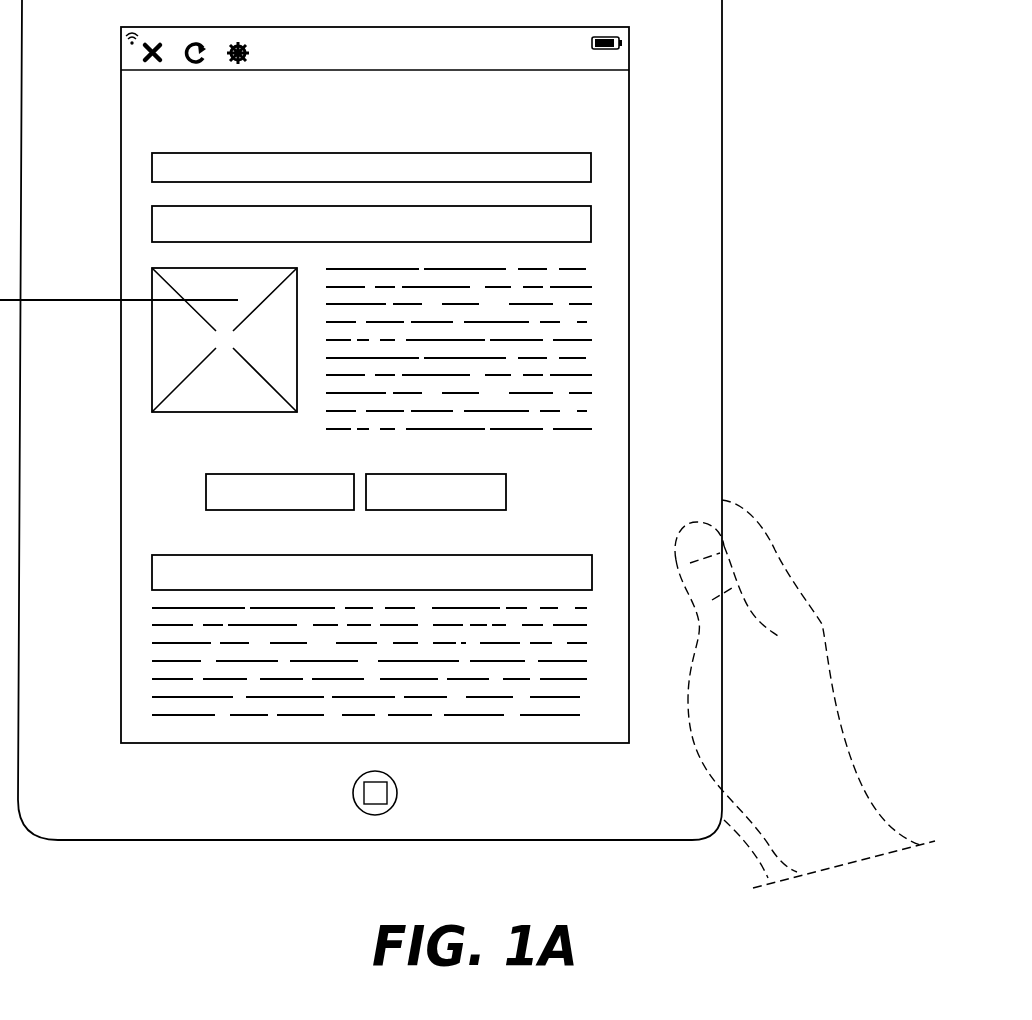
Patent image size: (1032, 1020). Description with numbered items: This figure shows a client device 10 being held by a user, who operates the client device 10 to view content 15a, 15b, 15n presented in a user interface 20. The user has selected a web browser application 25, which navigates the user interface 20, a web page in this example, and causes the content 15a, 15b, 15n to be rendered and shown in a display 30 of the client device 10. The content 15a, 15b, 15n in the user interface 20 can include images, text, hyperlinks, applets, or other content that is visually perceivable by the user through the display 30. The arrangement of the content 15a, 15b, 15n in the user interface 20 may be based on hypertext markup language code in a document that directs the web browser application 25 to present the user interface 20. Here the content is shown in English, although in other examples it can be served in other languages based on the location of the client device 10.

The client device 10 is at (722, 106).
The user interface 20 is at (605, 725).
The web browser application 25 is at (413, 51).
The display 30 is at (630, 346).
The content 15a is at (587, 165).
The content 15b is at (599, 268).
The content 15n is at (598, 657).